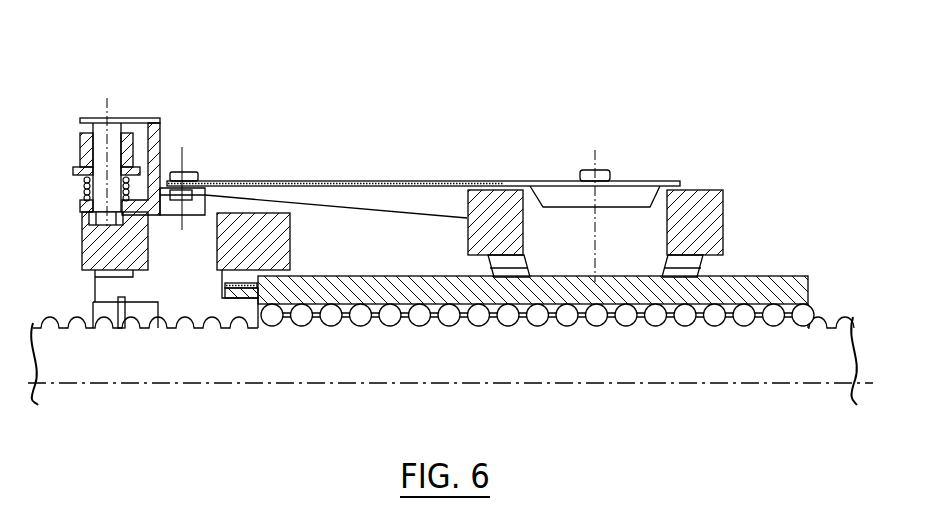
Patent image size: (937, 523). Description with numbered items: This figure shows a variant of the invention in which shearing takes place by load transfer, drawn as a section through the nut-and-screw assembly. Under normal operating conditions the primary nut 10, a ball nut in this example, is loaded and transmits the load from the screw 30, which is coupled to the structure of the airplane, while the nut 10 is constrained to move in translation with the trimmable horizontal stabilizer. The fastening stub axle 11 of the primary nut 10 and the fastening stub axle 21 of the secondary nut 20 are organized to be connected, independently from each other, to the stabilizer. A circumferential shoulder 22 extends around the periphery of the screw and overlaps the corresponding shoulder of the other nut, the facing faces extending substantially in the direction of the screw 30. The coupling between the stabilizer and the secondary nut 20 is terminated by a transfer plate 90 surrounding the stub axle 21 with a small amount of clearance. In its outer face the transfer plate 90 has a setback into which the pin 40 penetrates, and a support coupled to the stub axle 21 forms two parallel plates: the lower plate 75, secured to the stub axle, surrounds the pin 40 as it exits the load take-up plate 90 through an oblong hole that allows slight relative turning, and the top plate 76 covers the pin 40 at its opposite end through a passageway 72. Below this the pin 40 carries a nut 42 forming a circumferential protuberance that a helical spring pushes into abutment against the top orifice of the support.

The primary nut 10 is at (747, 293).
The fastening stub axle 11 is at (695, 215).
The secondary nut 20 is at (193, 285).
The fastening stub axle 21 is at (207, 232).
The circumferential shoulder 22 is at (247, 310).
The screw 30 is at (485, 360).
The pin 40 is at (100, 147).
The nut 42 is at (83, 137).
The through passageway 72 is at (118, 117).
The plate 75 is at (83, 200).
The top plate 76 is at (85, 118).
The transfer plate 90 is at (95, 250).